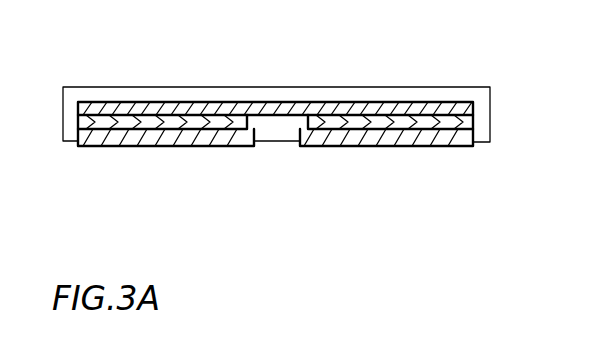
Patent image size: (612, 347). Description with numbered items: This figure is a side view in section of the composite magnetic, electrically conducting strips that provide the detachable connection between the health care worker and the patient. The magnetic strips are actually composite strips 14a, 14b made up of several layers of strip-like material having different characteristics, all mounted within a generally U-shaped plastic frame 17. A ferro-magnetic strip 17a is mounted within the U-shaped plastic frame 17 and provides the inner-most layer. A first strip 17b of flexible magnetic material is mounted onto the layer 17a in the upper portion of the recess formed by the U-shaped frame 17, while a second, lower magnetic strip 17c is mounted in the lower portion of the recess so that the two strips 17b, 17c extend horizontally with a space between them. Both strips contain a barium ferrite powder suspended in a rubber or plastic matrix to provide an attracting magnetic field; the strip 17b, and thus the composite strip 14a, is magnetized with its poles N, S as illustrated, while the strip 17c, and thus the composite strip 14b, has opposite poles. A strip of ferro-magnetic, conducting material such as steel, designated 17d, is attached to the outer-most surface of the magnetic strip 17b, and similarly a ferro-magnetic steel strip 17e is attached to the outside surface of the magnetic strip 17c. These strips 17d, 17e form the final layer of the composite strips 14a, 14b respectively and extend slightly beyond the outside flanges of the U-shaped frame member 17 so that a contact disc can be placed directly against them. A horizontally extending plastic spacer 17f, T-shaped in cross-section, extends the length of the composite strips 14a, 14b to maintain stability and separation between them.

The U-shaped plastic frame 17 is at (486, 101).
The ferro-magnetic strip 17a is at (283, 106).
The first strip of flexible magnetic material 17b is at (438, 148).
The second, lower magnetic strip 17c is at (227, 148).
The ferro-magnetic conducting strip 17d is at (344, 150).
The ferro-magnetic steel strip 17e is at (127, 149).
The plastic spacer 17f is at (282, 134).
The composite strip 14a is at (455, 148).
The composite strip 14b is at (93, 149).
The south pole S is at (164, 106).
The north pole N is at (399, 113).